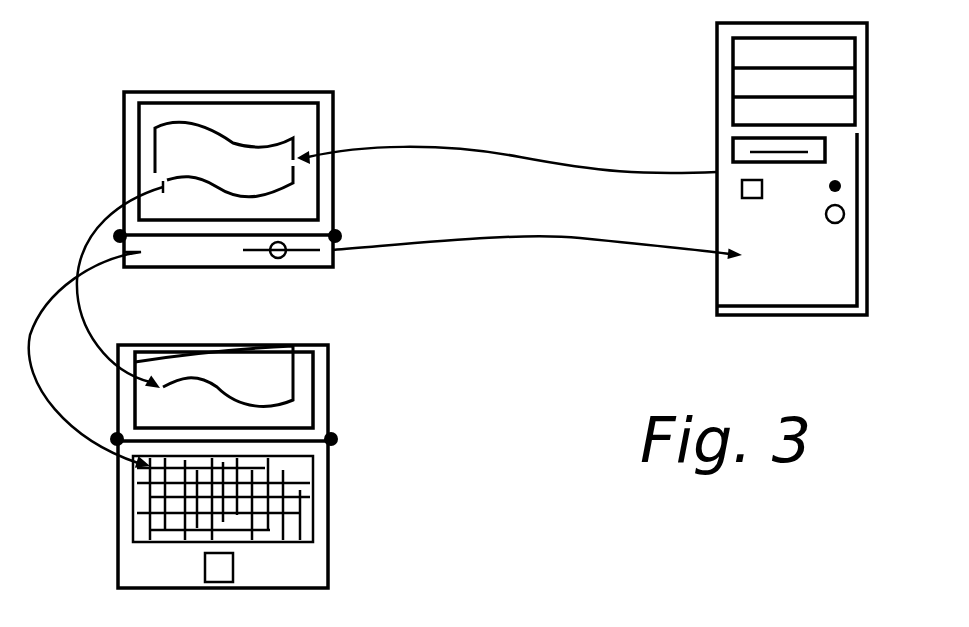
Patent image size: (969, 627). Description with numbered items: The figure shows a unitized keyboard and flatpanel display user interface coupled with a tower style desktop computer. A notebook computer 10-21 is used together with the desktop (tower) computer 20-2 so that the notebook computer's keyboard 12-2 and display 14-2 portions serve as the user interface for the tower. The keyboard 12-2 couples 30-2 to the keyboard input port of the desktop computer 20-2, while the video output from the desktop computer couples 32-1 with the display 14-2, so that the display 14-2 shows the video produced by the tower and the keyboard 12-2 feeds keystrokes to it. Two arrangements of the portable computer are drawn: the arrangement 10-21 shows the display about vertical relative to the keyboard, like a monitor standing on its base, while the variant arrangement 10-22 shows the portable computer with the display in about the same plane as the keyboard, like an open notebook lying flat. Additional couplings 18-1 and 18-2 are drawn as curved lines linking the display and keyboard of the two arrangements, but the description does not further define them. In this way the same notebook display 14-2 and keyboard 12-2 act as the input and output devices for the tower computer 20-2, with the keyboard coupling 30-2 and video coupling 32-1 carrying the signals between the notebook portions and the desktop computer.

The notebook computer 10-21 is at (345, 231).
The variant arrangement 10-22 is at (346, 431).
The keyboard 12-2 is at (298, 471).
The display 14-2 is at (238, 120).
The communication link between displays 18-1 is at (92, 311).
The communication link to keyboard 18-2 is at (80, 444).
The desktop computer 20-2 is at (710, 128).
The coupling 30-2 is at (600, 245).
The coupling 32-1 is at (508, 142).